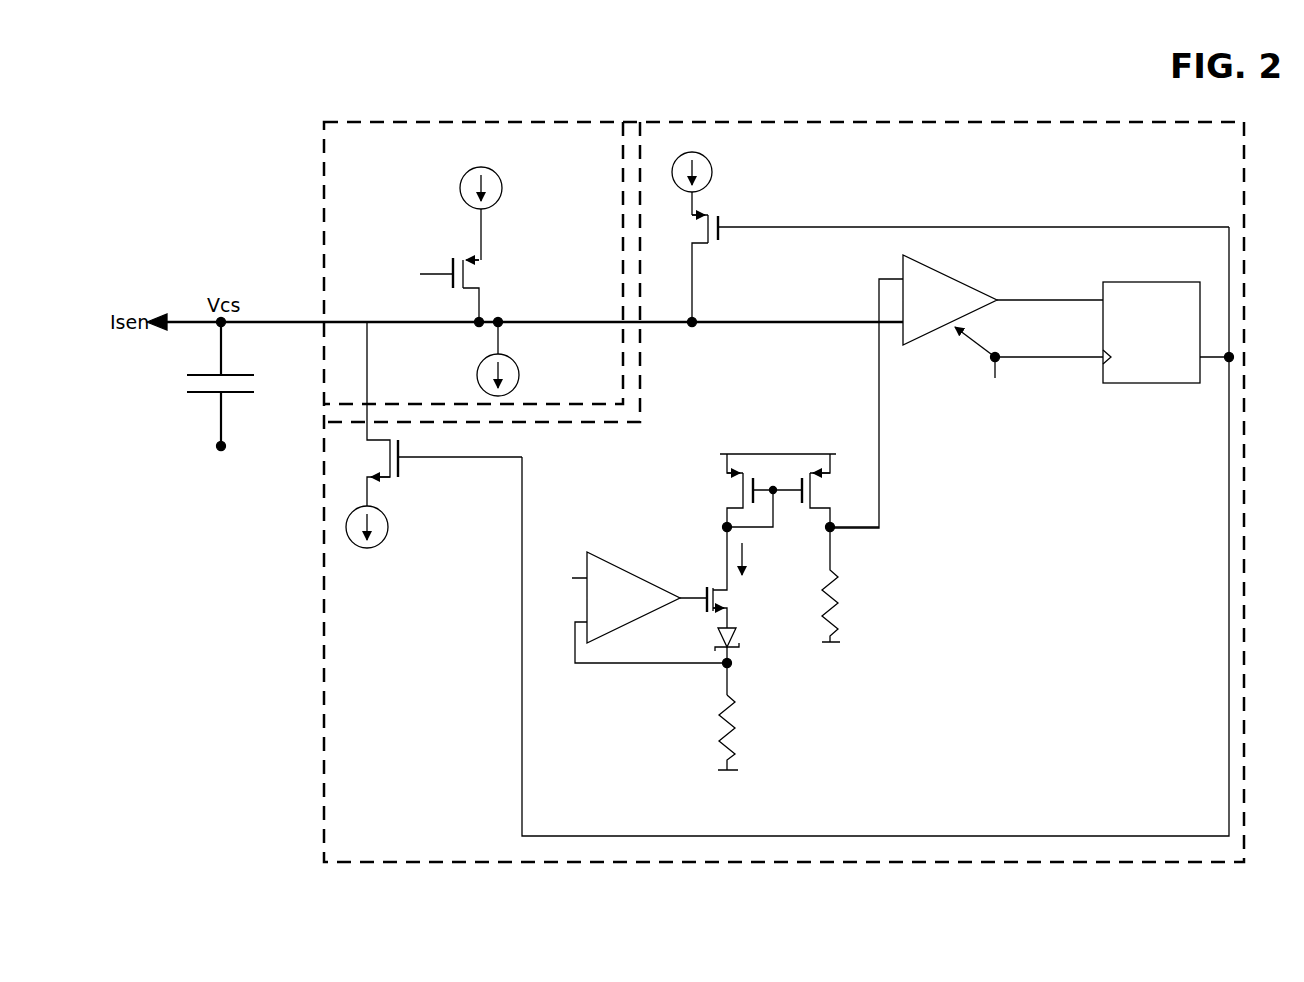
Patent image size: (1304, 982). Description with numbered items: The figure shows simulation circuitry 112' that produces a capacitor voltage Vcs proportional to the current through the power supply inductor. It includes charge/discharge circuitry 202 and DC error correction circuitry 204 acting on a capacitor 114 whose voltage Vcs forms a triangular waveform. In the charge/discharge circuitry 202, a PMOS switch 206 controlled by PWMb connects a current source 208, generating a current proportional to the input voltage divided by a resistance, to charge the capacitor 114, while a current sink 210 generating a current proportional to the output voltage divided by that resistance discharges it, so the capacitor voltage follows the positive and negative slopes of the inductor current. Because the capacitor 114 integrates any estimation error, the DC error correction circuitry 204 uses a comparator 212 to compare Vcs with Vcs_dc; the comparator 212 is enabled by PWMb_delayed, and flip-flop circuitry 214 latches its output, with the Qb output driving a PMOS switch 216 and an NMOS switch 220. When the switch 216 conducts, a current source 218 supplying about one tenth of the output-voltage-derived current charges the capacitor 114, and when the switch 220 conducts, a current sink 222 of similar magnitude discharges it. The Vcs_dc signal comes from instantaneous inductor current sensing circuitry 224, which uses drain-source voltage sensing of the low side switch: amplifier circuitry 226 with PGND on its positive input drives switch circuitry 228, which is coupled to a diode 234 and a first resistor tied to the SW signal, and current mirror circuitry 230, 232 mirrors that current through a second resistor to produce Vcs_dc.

The simulation circuitry 112' is at (695, 477).
The capacitor 114 is at (257, 384).
The charge/discharge circuitry 202 is at (473, 263).
The DC error correction circuitry 204 is at (782, 272).
The switch 206 is at (451, 255).
The current source 208 is at (500, 173).
The current sink 210 is at (476, 369).
The comparator 212 is at (952, 276).
The flip-flop circuitry 214 is at (1150, 278).
The switch 216 is at (722, 240).
The current source 218 is at (712, 163).
The switch 220 is at (403, 466).
The current sink 222 is at (385, 546).
The instantaneous inductor current sensing circuitry 224 is at (651, 494).
The amplifier circuitry 226 is at (636, 572).
The switch circuitry 228 is at (730, 604).
The current mirror circuitry 230 is at (734, 498).
The current mirror circuitry 232 is at (820, 500).
The diode 234 is at (713, 650).